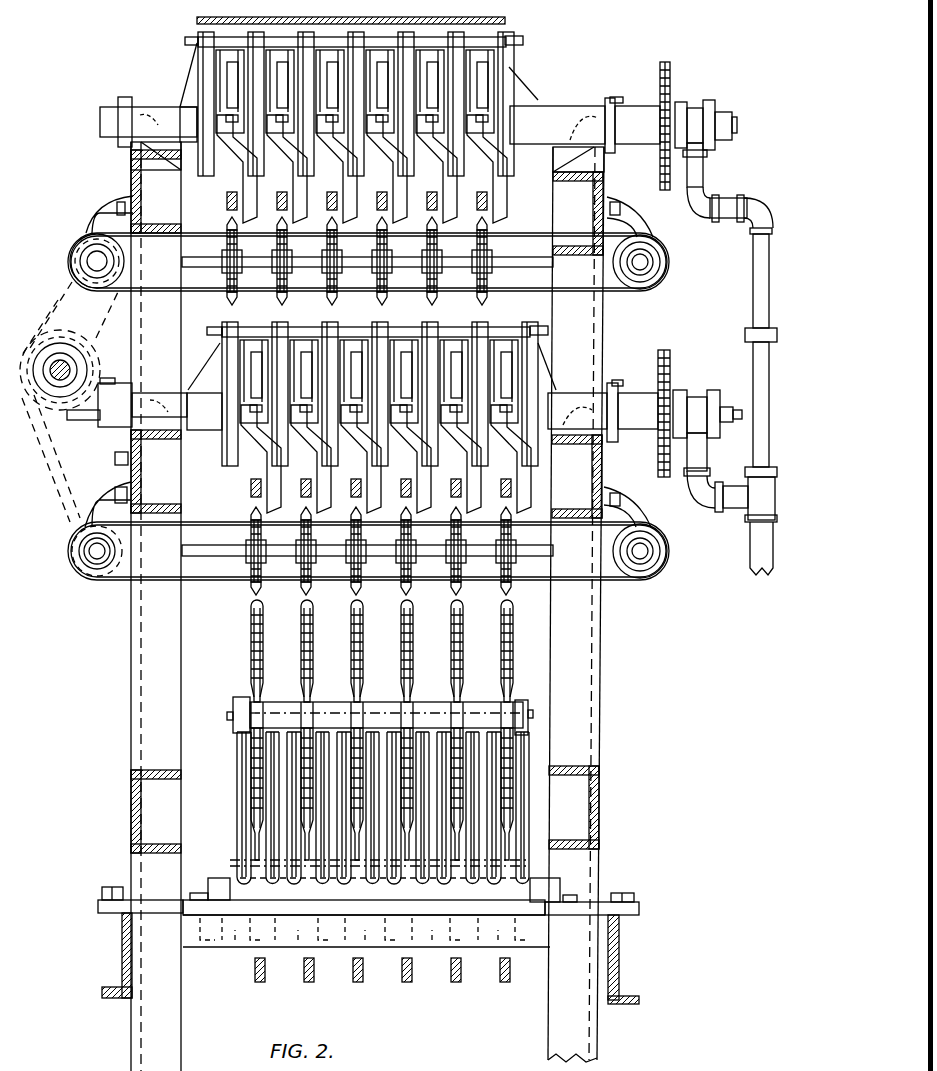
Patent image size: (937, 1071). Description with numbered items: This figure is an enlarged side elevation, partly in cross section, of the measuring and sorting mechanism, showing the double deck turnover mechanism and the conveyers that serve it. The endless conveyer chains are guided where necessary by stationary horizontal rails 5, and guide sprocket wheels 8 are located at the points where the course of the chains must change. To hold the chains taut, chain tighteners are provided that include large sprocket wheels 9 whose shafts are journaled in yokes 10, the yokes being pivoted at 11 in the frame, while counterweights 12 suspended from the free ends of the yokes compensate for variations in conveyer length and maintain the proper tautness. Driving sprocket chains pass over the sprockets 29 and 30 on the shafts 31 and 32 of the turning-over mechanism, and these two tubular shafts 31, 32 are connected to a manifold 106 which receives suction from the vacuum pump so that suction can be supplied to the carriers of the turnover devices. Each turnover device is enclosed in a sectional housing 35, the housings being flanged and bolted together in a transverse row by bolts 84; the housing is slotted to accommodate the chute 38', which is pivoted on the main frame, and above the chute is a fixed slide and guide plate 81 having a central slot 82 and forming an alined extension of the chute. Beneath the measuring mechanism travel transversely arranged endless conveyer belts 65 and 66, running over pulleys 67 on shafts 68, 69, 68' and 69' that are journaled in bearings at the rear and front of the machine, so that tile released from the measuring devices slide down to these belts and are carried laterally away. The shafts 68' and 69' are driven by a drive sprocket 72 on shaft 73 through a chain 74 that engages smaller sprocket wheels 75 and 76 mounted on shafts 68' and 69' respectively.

The stationary horizontal rails 5 is at (225, 201).
The guide sprocket wheels 8 is at (228, 293).
The large sprocket wheels 9 is at (245, 640).
The yokes 10 is at (238, 762).
The pivot 11 is at (218, 880).
The counterweights 12 is at (240, 935).
The sprocket 29 is at (668, 480).
The sprocket 30 is at (668, 76).
The shaft 31 is at (733, 400).
The shaft 32 is at (640, 105).
The sectional housing 35 is at (215, 58).
The chute 38' is at (549, 345).
The endless conveyer belt 65 is at (611, 590).
The endless conveyer belt 66 is at (613, 288).
The pulleys 67 is at (678, 582).
The shaft 68 is at (660, 551).
The shaft 68' is at (72, 558).
The shaft 69 is at (653, 260).
The shaft 69' is at (73, 261).
The drive sprocket 72 is at (75, 365).
The shaft 73 is at (62, 386).
The chain 74 is at (58, 486).
The smaller sprocket wheel 75 is at (78, 548).
The smaller sprocket wheel 76 is at (88, 238).
The guide plate 81 is at (497, 56).
The central slot 82 is at (228, 88).
The bolts 84 is at (505, 37).
The manifold 106 is at (770, 562).